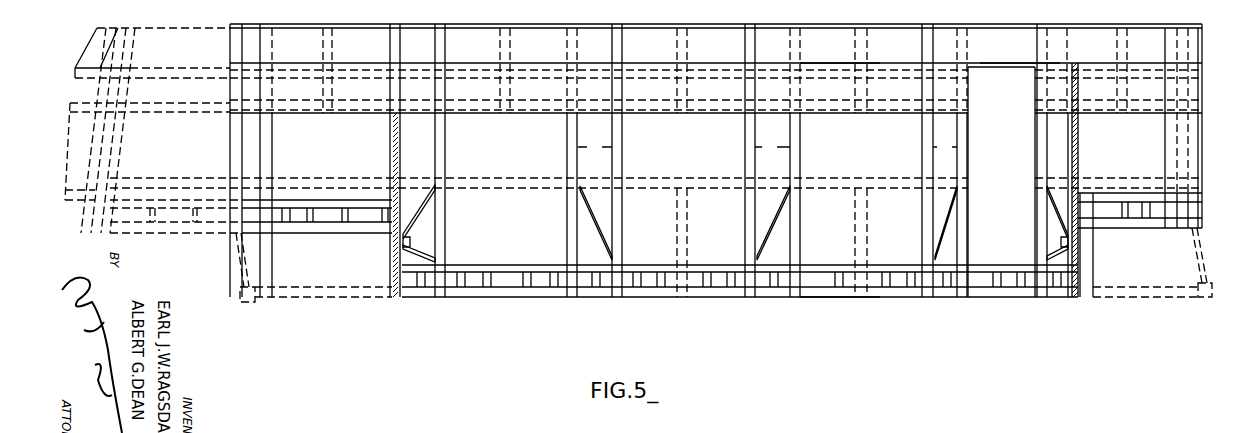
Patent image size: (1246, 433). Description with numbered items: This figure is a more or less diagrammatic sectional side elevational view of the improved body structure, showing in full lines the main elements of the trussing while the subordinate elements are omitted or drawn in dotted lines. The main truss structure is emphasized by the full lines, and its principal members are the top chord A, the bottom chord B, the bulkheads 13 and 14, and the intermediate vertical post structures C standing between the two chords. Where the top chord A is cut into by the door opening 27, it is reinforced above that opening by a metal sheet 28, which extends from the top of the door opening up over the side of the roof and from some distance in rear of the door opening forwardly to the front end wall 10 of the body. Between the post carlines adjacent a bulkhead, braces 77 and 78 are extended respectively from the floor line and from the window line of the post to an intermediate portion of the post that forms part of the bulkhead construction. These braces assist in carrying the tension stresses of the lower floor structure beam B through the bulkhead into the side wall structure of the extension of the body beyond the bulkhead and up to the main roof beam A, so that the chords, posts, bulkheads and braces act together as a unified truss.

The front end wall 10 is at (1208, 50).
The bulkhead 13 is at (1080, 150).
The bulkhead 14 is at (400, 156).
The door opening 27 is at (1013, 189).
The metal sheet 28 is at (1034, 16).
The brace 77 is at (420, 252).
The brace 78 is at (423, 211).
The top chord A is at (840, 40).
The bottom chord B is at (838, 292).
The intermediate vertical post structure C is at (767, 147).